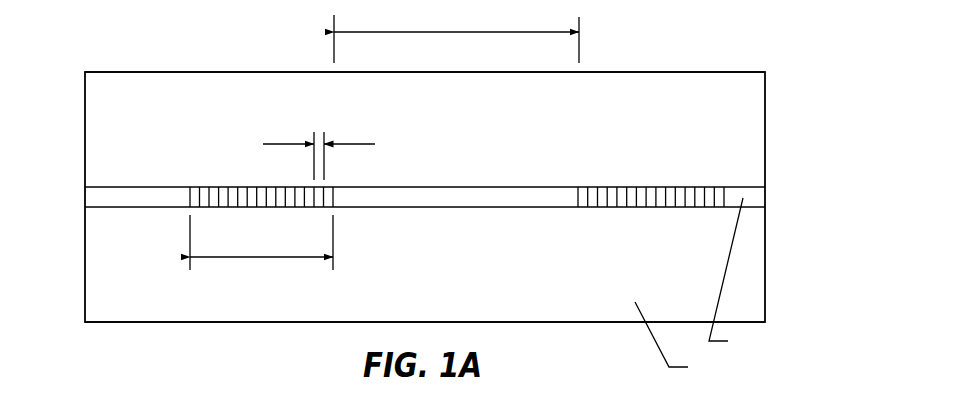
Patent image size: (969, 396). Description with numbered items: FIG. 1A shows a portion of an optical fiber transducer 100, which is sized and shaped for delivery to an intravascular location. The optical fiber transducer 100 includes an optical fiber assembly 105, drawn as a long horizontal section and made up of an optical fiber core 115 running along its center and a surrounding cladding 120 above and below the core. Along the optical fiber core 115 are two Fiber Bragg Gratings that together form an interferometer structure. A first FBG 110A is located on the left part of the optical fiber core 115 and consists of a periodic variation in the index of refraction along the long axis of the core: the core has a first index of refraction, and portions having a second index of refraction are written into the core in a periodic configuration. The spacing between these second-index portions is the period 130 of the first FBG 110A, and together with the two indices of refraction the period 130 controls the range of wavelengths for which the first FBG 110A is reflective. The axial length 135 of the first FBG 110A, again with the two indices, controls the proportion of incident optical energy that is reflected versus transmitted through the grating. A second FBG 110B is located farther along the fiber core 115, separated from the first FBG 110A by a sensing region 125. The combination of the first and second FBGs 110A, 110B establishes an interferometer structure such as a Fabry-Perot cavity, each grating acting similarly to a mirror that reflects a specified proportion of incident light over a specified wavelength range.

The optical fiber transducer 100 is at (712, 35).
The optical fiber assembly 105 is at (75, 72).
The first FBG 110A is at (213, 187).
The second FBG 110B is at (612, 187).
The optical fiber core 115 is at (765, 197).
The cladding 120 is at (765, 128).
The sensing region 125 is at (455, 32).
The period 130 is at (348, 143).
The axial length 135 is at (262, 257).